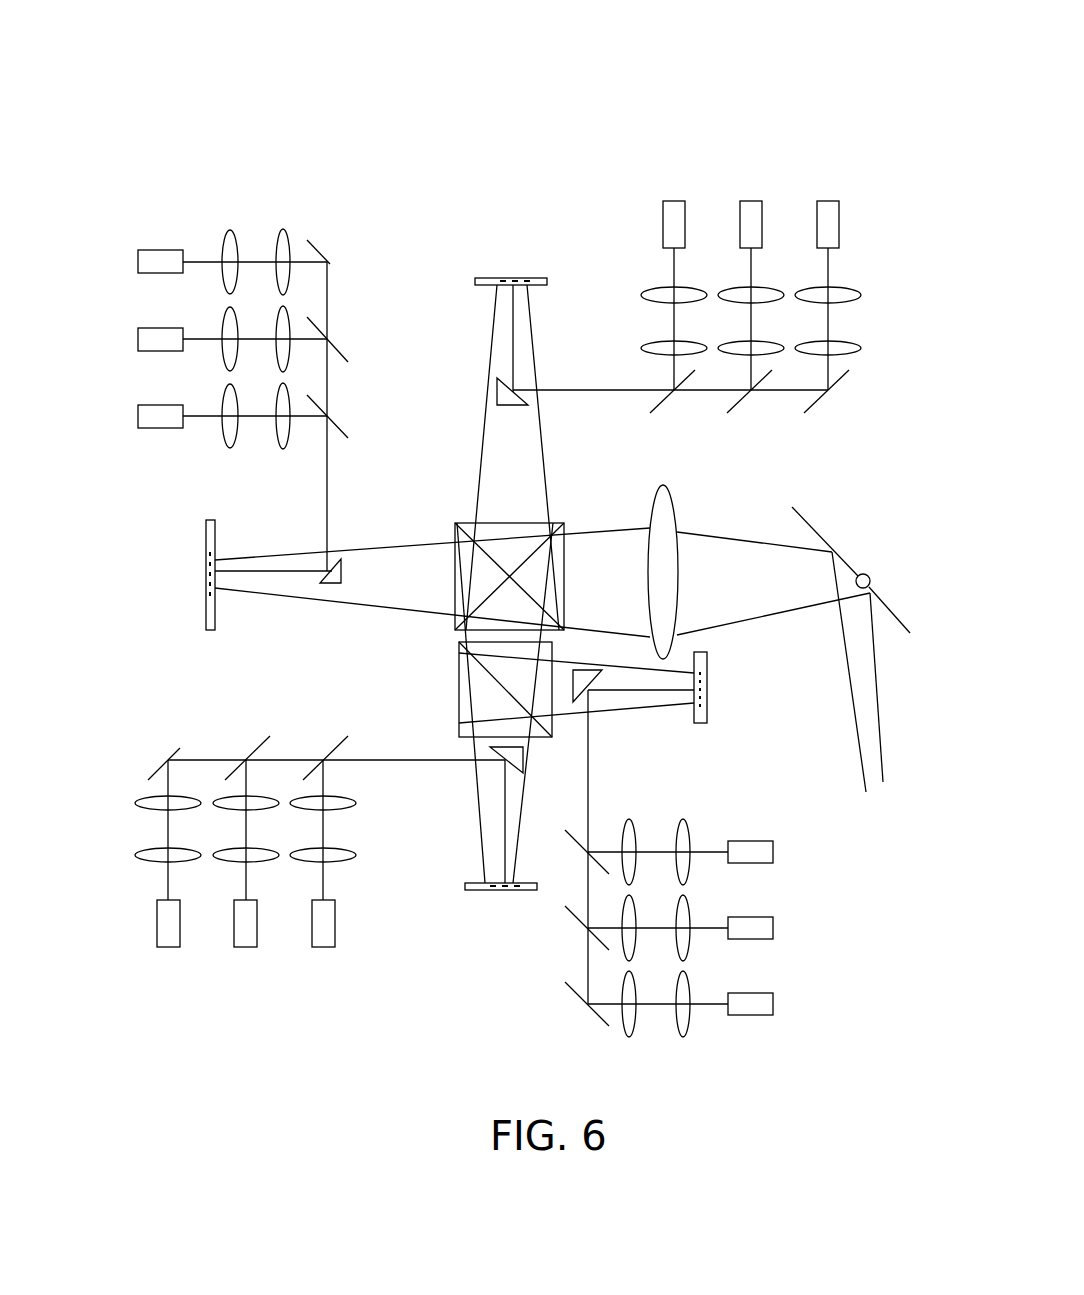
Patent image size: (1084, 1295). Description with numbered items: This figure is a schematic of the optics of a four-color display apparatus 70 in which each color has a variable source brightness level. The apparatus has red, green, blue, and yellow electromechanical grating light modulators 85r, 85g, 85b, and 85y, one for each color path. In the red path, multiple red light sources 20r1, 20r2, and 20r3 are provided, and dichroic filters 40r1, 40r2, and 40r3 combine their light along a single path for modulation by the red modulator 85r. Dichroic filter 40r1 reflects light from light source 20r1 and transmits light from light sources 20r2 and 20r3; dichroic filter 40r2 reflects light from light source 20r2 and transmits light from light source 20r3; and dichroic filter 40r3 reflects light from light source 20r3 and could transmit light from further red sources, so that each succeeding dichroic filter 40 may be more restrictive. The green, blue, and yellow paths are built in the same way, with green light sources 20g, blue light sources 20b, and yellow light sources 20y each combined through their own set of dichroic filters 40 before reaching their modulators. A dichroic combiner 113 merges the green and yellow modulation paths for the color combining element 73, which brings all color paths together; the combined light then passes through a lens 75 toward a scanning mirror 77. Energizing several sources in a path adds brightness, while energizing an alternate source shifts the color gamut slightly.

The display apparatus 70 is at (475, 88).
The green light sources 20g is at (141, 274).
The blue light sources 20b is at (320, 947).
The yellow light sources 20y is at (775, 852).
The red light source 20r1 is at (670, 201).
The red light source 20r2 is at (747, 201).
The red light source 20r3 is at (824, 201).
The dichroic filters 40 is at (330, 264).
The dichroic filter 40r1 is at (664, 398).
The dichroic filter 40r2 is at (741, 398).
The dichroic filter 40r3 is at (819, 398).
The red electromechanical grating light modulator 85r is at (520, 278).
The green electromechanical grating light modulator 85g is at (206, 615).
The blue electromechanical grating light modulator 85b is at (470, 892).
The yellow electromechanical grating light modulator 85y is at (707, 714).
The color combining element 73 is at (456, 523).
The dichroic combiner 113 is at (458, 700).
The lens 75 is at (650, 523).
The scanning mirror 77 is at (839, 561).